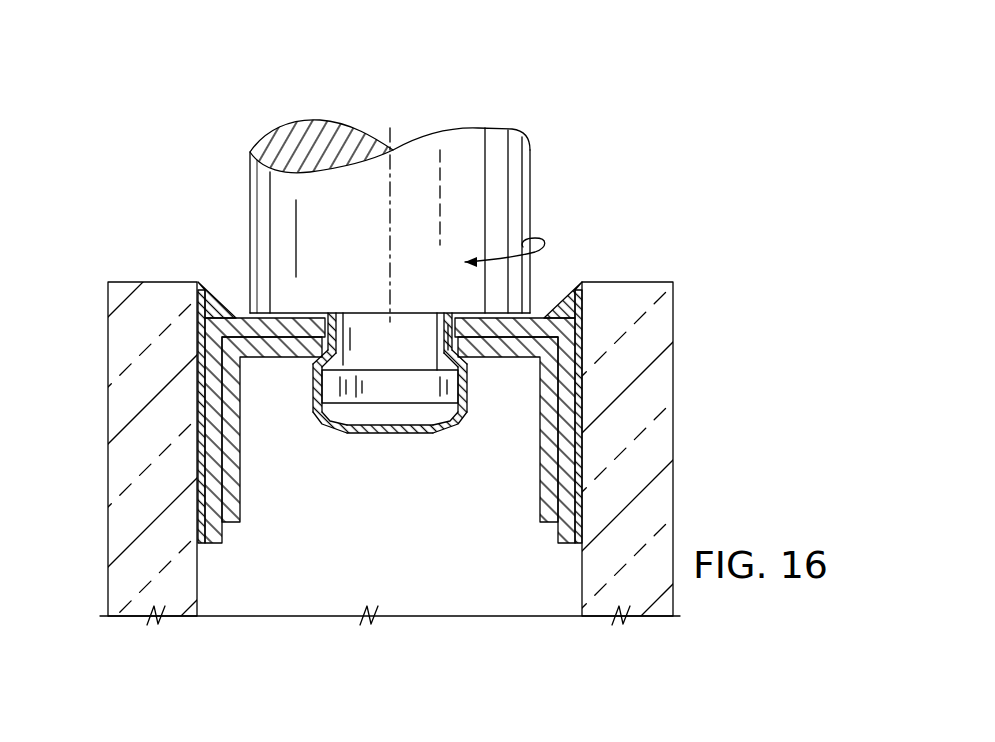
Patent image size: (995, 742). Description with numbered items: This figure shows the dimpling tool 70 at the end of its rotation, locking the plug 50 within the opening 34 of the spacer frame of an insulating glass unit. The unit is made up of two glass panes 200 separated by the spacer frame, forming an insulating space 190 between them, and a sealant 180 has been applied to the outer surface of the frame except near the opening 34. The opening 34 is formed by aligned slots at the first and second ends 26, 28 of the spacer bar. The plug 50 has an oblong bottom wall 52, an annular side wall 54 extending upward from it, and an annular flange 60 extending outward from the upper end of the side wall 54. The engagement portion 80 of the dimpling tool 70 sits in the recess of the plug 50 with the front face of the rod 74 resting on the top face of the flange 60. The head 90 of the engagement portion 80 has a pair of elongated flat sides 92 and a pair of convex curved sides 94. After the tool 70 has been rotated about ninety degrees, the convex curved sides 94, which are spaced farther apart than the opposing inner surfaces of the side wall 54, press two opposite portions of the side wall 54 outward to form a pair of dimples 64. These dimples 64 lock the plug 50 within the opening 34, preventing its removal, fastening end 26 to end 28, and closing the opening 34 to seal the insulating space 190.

The dimpling tool 70 is at (375, 204).
The rod 74 is at (518, 177).
The opening 34 is at (339, 318).
The second end 28 is at (297, 327).
The dimples 64 is at (348, 367).
The annular flange 60 is at (547, 312).
The sealant 180 is at (571, 302).
The glass panes 200 is at (117, 338).
The first end 26 is at (283, 345).
The side wall 54 is at (467, 373).
The convex curved sides 94 is at (328, 388).
The engagement portion 80 is at (352, 422).
The plug 50 is at (397, 381).
The elongated flat sides 92 is at (402, 397).
The bottom wall 52 is at (412, 432).
The head 90 is at (431, 422).
The insulating space 190 is at (438, 593).